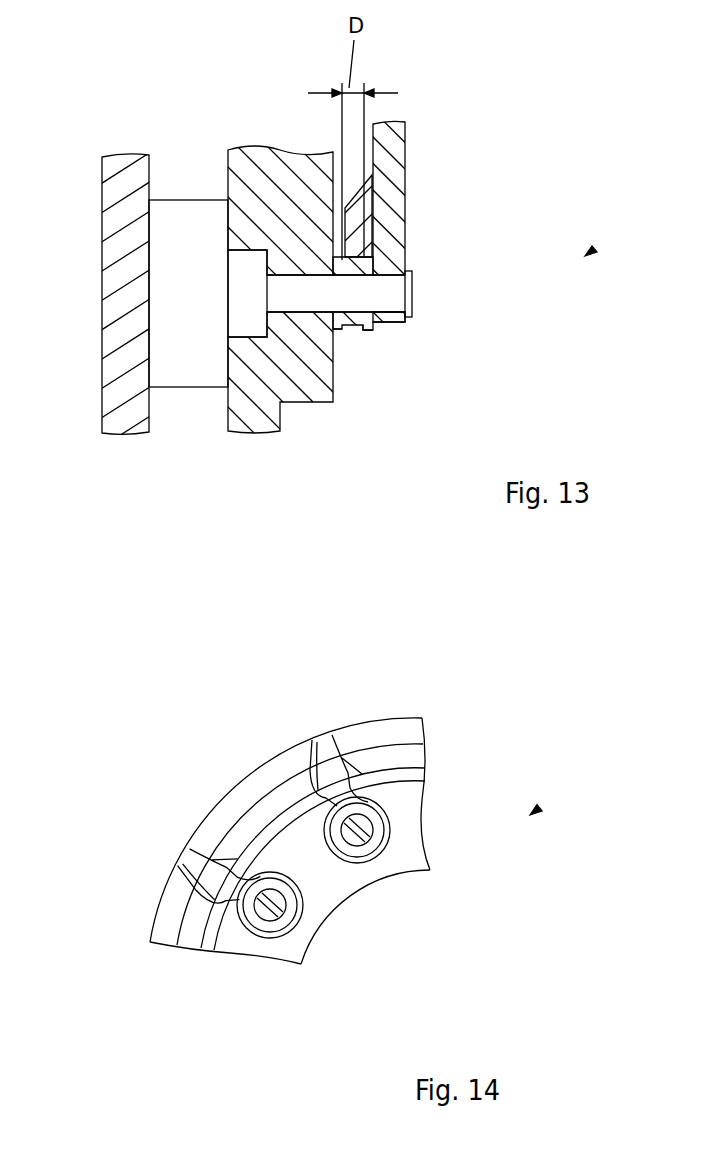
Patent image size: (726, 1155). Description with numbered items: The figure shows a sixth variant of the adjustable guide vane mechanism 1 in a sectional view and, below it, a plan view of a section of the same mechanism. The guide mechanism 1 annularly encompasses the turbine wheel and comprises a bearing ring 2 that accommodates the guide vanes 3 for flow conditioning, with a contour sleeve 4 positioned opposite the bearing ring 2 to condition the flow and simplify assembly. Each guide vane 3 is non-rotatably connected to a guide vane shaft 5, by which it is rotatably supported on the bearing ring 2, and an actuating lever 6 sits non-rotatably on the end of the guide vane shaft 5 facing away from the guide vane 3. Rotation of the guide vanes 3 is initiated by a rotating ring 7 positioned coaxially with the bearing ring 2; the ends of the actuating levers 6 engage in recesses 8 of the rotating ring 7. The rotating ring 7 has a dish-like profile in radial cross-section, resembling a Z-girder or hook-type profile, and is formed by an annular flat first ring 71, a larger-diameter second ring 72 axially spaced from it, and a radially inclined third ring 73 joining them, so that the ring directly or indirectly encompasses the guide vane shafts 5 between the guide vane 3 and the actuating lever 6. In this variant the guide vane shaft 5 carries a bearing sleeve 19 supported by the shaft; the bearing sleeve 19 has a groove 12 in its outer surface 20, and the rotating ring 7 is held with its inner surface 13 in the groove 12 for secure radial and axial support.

In FIG. 13, the guide vane mechanism 1 is at (592, 251).
In FIG. 14, the guide vane mechanism 1 is at (538, 812).
In FIG. 13, the bearing ring 2 is at (265, 410).
In FIG. 14, the bearing ring 2 is at (323, 905).
In FIG. 13, the guide vane 3 is at (200, 304).
In FIG. 13, the contour sleeve 4 is at (104, 231).
In FIG. 13, the guide vane shaft 5 is at (372, 294).
In FIG. 14, the guide vane shaft 5 is at (275, 918).
In FIG. 13, the actuating lever 6 is at (407, 196).
In FIG. 14, the actuating lever 6 is at (205, 884).
In FIG. 13, the rotating ring 7 is at (352, 184).
In FIG. 14, the rotating ring 7 is at (238, 777).
In FIG. 14, the recess 8 is at (182, 855).
In FIG. 13, the groove 12 is at (353, 327).
In FIG. 13, the inner surface 13 is at (375, 283).
In FIG. 13, the bearing sleeve 19 is at (378, 344).
In FIG. 14, the bearing sleeve 19 is at (292, 931).
In FIG. 13, the outer surface 20 is at (338, 335).
In FIG. 14, the first ring 71 is at (208, 957).
In FIG. 14, the second ring 72 is at (170, 943).
In FIG. 14, the third ring 73 is at (188, 944).